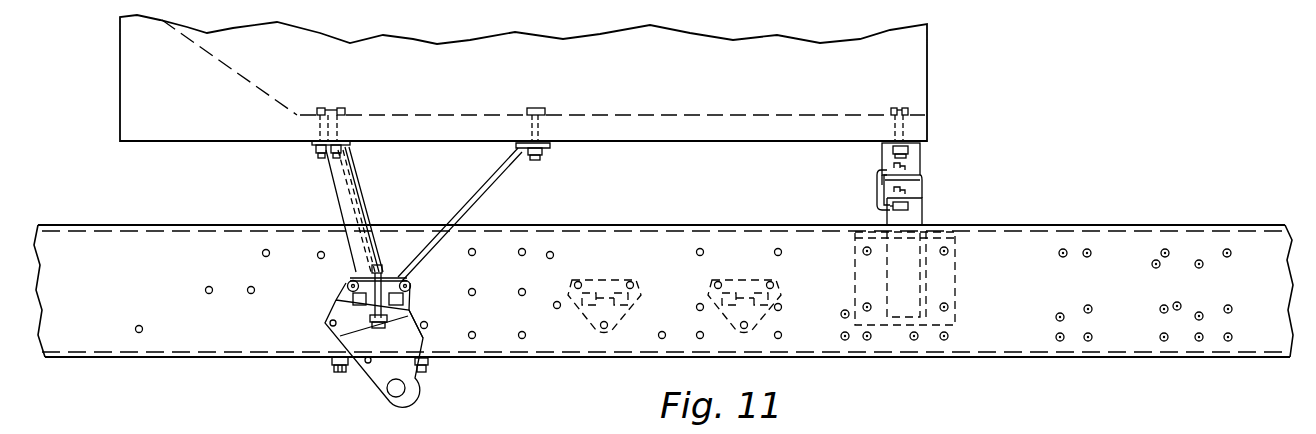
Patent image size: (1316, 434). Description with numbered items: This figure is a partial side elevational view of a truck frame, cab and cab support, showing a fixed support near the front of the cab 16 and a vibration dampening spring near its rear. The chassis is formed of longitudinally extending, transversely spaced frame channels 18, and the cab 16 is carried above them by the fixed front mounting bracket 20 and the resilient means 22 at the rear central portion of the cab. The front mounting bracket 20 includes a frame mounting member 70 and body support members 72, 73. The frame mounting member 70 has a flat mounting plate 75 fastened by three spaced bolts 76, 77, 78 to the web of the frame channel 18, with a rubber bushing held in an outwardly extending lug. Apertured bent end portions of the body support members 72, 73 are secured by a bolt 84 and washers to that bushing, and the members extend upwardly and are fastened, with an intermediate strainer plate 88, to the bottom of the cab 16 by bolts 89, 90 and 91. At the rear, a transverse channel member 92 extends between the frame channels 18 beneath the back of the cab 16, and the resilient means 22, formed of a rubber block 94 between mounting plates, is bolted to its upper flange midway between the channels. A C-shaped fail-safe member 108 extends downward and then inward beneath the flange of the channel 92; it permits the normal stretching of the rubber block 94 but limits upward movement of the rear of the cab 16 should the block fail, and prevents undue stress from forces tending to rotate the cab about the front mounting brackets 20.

The cab 16 is at (497, 78).
The frame channel 18 is at (1012, 342).
The front mounting bracket 20 is at (400, 190).
The resilient means 22 is at (881, 216).
The frame mounting member 70 is at (364, 324).
The body support member 72 is at (361, 197).
The body support member 73 is at (488, 190).
The mounting plate 75 is at (343, 294).
The bolt 76 is at (348, 280).
The bolt 77 is at (328, 350).
The bolt 78 is at (414, 283).
The bolt 84 is at (390, 266).
The strainer plate 88 is at (436, 144).
The bolt 89 is at (343, 108).
The bolt 90 is at (318, 107).
The bolt 91 is at (535, 107).
The transverse channel member 92 is at (925, 217).
The rubber block 94 is at (920, 188).
The fail-safe member 108 is at (875, 198).